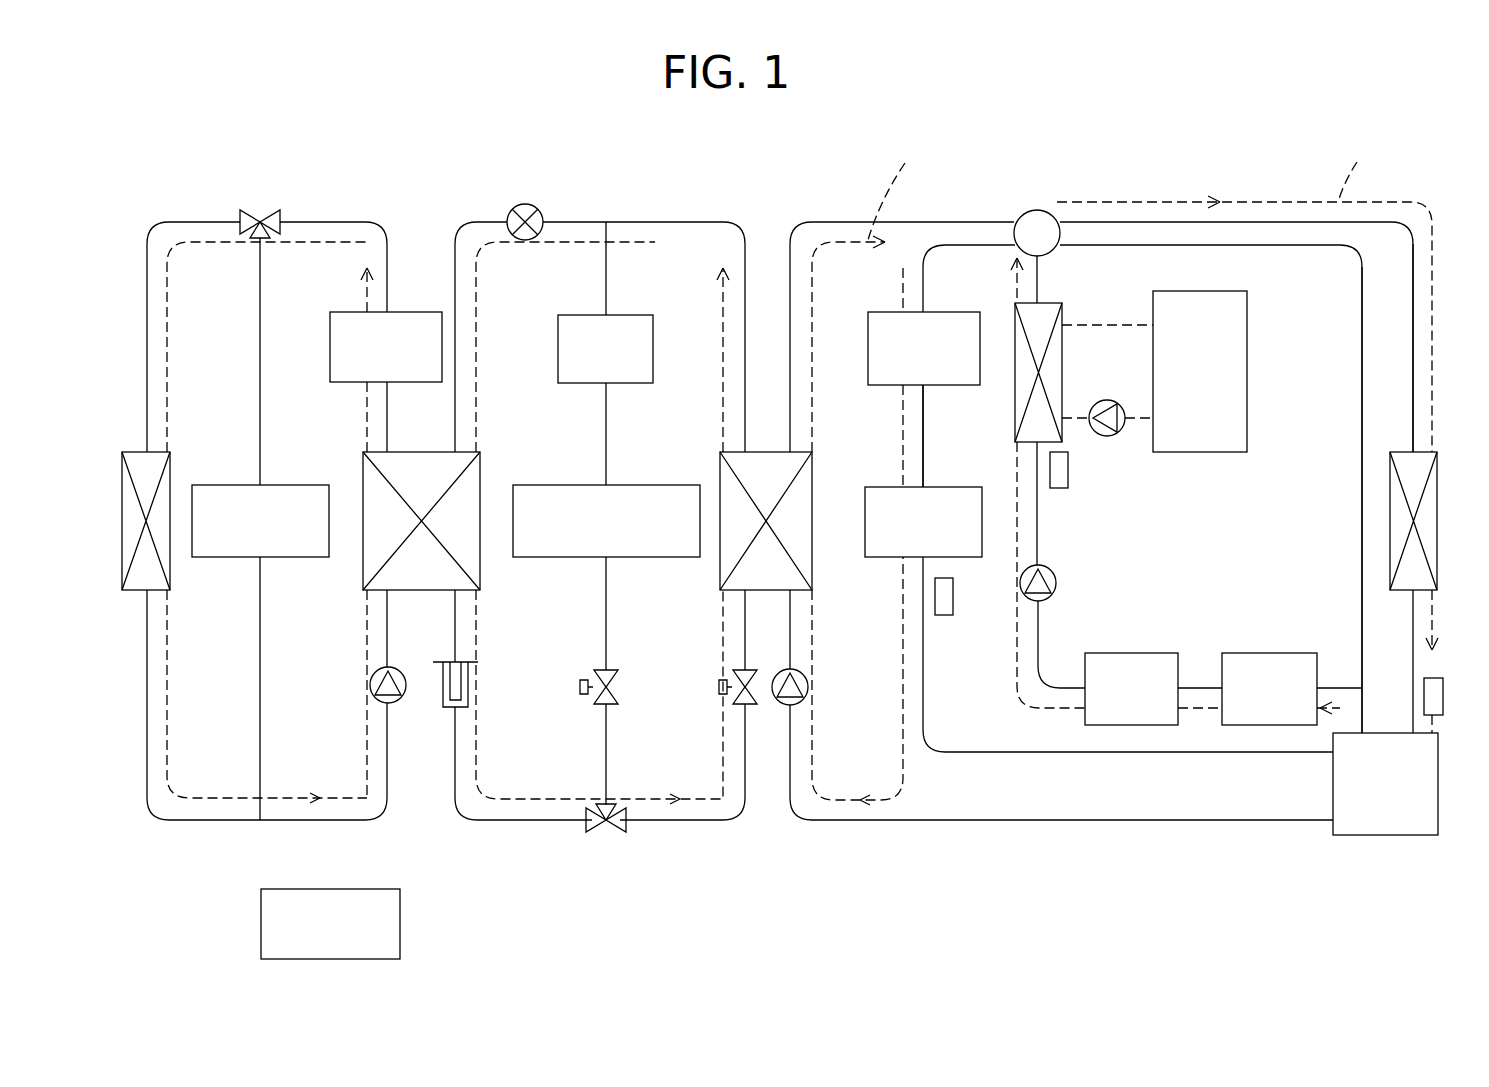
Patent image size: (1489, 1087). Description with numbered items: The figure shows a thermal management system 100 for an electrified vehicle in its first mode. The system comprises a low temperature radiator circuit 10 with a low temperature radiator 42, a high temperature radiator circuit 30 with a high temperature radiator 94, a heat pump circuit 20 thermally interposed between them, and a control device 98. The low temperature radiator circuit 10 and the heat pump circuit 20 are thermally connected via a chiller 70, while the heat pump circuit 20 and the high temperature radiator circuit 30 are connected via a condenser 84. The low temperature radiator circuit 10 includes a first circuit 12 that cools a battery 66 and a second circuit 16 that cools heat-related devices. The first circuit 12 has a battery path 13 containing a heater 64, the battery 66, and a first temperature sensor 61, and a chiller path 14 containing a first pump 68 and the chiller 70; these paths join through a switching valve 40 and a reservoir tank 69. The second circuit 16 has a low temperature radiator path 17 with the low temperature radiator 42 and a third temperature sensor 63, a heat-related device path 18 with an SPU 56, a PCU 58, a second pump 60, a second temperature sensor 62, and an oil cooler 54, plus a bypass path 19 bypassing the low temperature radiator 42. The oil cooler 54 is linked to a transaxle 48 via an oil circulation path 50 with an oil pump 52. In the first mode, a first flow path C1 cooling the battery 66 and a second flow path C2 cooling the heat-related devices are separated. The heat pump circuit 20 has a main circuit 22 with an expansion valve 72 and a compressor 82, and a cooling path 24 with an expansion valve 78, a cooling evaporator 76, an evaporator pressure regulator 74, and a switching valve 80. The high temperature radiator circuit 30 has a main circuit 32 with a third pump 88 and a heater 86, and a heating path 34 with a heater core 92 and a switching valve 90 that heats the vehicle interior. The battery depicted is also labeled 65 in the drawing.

The thermal management system 100 is at (1405, 86).
The low temperature radiator circuit 10 is at (1176, 182).
The first circuit 12 is at (848, 203).
The battery path 13 is at (925, 440).
The chiller path 14 is at (792, 298).
The second circuit 16 is at (1256, 193).
The low temperature radiator path 17 is at (1378, 222).
The heat-related device path 18 is at (1035, 480).
The bypass path 19 is at (1360, 342).
The heat pump circuit 20 is at (638, 187).
The main circuit 22 is at (458, 297).
The cooling path 24 is at (608, 438).
The high temperature radiator circuit 30 is at (325, 195).
The main circuit 32 is at (397, 240).
The heating path 34 is at (258, 352).
The switching valve 40 is at (1037, 210).
The low temperature radiator 42 is at (1410, 450).
The transaxle 48 is at (1200, 454).
The oil circulation path 50 is at (1100, 325).
The oil pump 52 is at (1110, 440).
The oil cooler 54 is at (1052, 303).
The smart power unit (SPU) 56 is at (1270, 652).
The power control unit (PCU) 58 is at (1130, 652).
The second pump 60 is at (1057, 585).
The first temperature sensor 61 is at (945, 616).
The second temperature sensor 62 is at (1060, 489).
The third temperature sensor 63 is at (1442, 678).
The heater 64 is at (950, 312).
The battery 65 is at (923, 522).
The battery 66 is at (888, 487).
The first pump 68 is at (808, 686).
The reservoir tank 69 is at (1385, 836).
The chiller 70 is at (778, 594).
The expansion valve 72 is at (730, 680).
The evaporator pressure regulator (EPR) 74 is at (585, 314).
The cooling evaporator 76 is at (558, 485).
The expansion valve 78 is at (618, 695).
The switching valve 80 is at (600, 832).
The compressor 82 is at (523, 204).
The condenser 84 is at (440, 594).
The heater 86 is at (352, 310).
The third pump 88 is at (370, 685).
The switching valve 90 is at (258, 210).
The heater core 92 is at (238, 485).
The high temperature radiator 94 is at (135, 450).
The control device 98 is at (400, 922).
The first flow path C1 is at (894, 188).
The second flow path C2 is at (1247, 393).